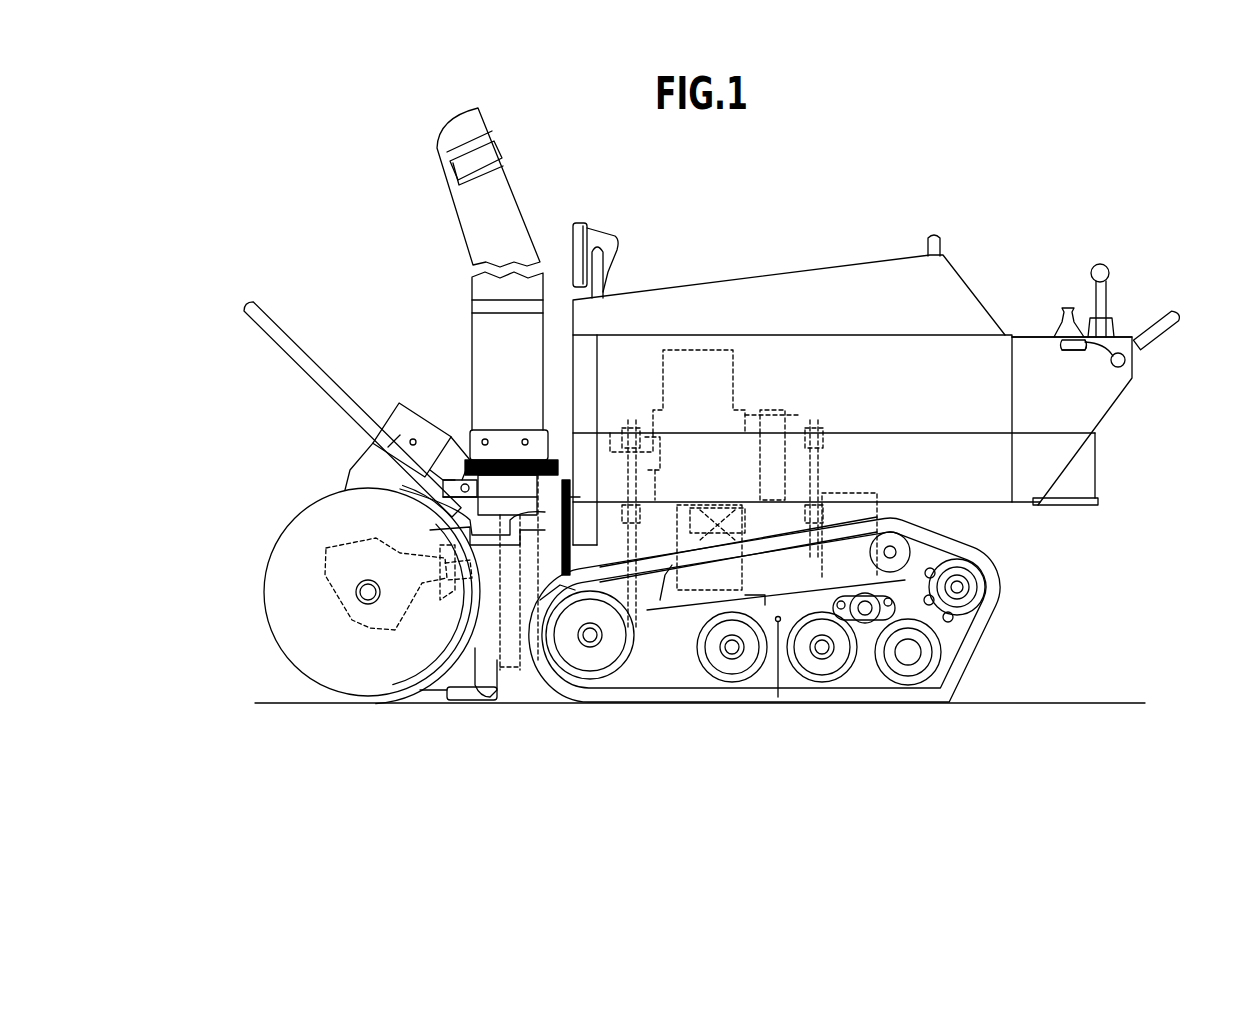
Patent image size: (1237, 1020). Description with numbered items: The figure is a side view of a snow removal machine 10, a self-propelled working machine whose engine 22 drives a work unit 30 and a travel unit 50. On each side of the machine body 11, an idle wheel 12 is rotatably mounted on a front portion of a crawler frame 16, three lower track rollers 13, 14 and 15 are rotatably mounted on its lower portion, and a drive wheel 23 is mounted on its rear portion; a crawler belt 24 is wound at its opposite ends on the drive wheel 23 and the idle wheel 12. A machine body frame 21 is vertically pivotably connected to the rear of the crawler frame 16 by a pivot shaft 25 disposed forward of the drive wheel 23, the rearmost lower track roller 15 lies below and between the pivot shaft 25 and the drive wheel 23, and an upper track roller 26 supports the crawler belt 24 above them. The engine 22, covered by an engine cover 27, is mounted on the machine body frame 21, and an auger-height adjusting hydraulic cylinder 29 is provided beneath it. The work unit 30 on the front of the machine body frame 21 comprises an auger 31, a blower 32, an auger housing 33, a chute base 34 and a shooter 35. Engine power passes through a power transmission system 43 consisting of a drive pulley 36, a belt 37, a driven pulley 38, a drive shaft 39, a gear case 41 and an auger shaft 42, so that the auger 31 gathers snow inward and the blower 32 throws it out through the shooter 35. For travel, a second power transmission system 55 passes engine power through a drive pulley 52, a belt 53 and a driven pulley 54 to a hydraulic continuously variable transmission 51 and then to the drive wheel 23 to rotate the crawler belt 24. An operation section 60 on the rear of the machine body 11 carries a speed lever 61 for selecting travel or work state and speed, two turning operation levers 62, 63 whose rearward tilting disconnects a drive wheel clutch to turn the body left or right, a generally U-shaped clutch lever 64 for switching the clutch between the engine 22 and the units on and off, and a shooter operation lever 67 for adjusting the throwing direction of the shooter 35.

The snow removal machine 10 is at (1050, 186).
The machine body 11 is at (860, 330).
The idle wheel 12 is at (600, 678).
The lower track roller 13 is at (722, 683).
The lower track roller 14 is at (835, 683).
The lower track roller 15 is at (935, 690).
The crawler frame 16 is at (780, 650).
The machine body frame 21 is at (758, 598).
The engine 22 is at (703, 348).
The drive wheel 23 is at (988, 588).
The crawler belt 24 is at (975, 650).
The pivot shaft 25 is at (866, 614).
The upper track roller 26 is at (906, 549).
The engine cover 27 is at (752, 285).
The auger-height adjusting hydraulic cylinder 29 is at (693, 602).
The work unit 30 is at (262, 426).
The auger 31 is at (263, 581).
The blower 32 is at (457, 527).
The auger housing 33 is at (398, 448).
The chute base 34 is at (500, 423).
The shooter 35 is at (447, 186).
The drive pulley 36 is at (644, 440).
The belt 37 is at (645, 478).
The driven pulley 38 is at (645, 512).
The drive shaft 39 is at (558, 662).
The gear case 41 is at (335, 596).
The auger shaft 42 is at (362, 602).
The power transmission system 43 is at (632, 428).
The travel unit 50 is at (975, 530).
The hydraulic continuously variable transmission 51 is at (882, 525).
The drive pulley 52 is at (826, 445).
The belt 53 is at (848, 470).
The driven pulley 54 is at (852, 495).
The power transmission system 55 is at (815, 425).
The operation section 60 is at (1025, 335).
The speed lever 61 is at (1102, 266).
The turning operation lever 62 is at (1110, 307).
The turning operation lever 63 is at (1074, 345).
The clutch lever 64 is at (1163, 333).
The shooter operation lever 67 is at (1068, 308).